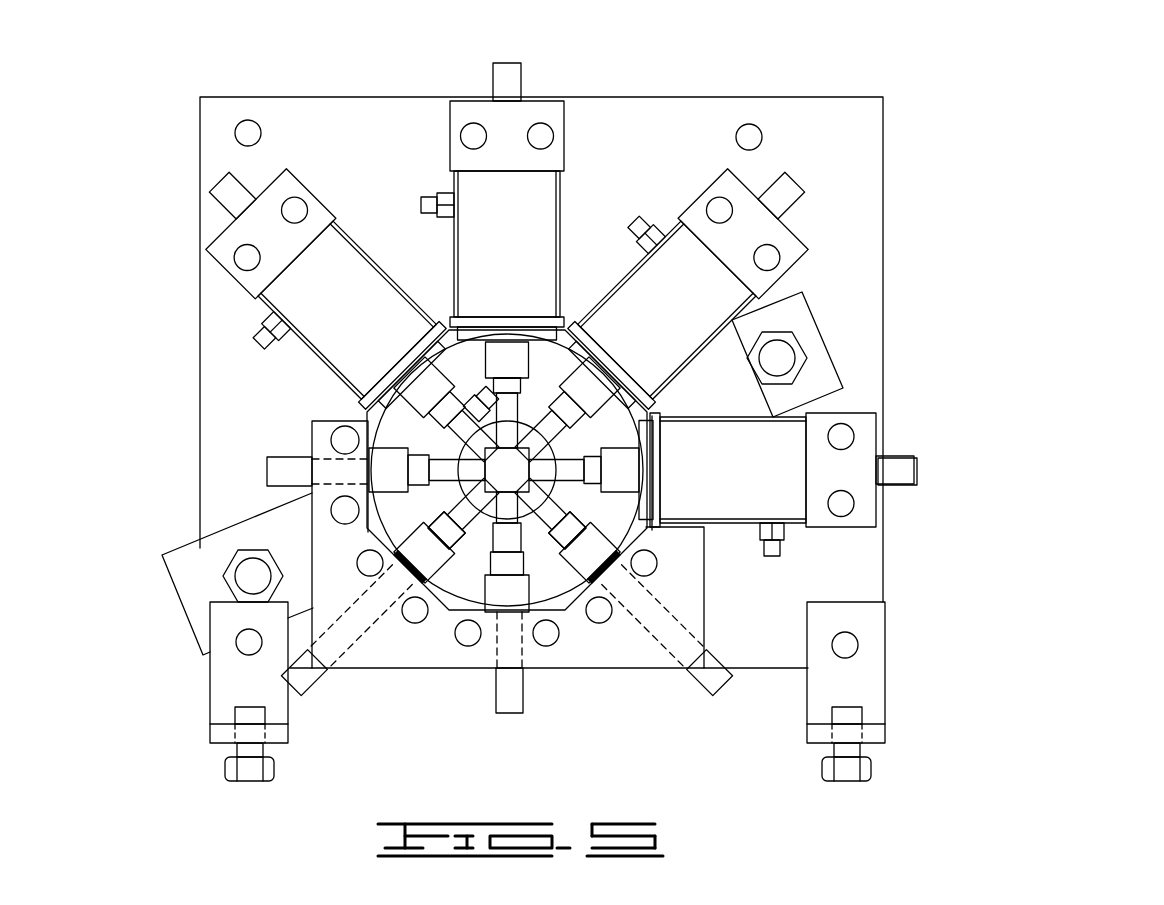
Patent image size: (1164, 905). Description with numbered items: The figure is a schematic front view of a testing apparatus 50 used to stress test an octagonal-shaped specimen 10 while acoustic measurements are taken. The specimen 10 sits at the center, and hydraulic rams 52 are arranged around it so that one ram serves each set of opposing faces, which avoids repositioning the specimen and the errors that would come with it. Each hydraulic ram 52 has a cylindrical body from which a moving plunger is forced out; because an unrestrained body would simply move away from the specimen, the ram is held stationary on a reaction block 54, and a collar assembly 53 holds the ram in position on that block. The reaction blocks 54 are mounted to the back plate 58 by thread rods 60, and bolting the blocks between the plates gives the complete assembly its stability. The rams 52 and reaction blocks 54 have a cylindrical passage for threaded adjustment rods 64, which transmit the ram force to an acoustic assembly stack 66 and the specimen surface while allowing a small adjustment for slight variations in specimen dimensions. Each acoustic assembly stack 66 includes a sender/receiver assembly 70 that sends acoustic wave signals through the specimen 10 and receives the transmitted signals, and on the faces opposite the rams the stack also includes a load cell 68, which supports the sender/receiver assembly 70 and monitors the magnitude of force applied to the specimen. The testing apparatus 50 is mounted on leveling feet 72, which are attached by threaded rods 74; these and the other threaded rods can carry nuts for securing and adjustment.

The octagonal-shaped specimen 10 is at (503, 473).
The testing apparatus 50 is at (1050, 105).
The hydraulic ram 52 is at (288, 293).
The collar assembly 53 is at (537, 386).
The reaction block 54 is at (527, 112).
The back plate 58 is at (813, 118).
The thread rod 60 is at (293, 208).
The threaded adjustment rod 64 is at (262, 473).
The acoustic assembly stack 66 is at (750, 310).
The load cell 68 is at (417, 517).
The sender/receiver assembly 70 is at (498, 538).
The leveling foot 72 is at (210, 720).
The threaded rod 74 is at (249, 642).